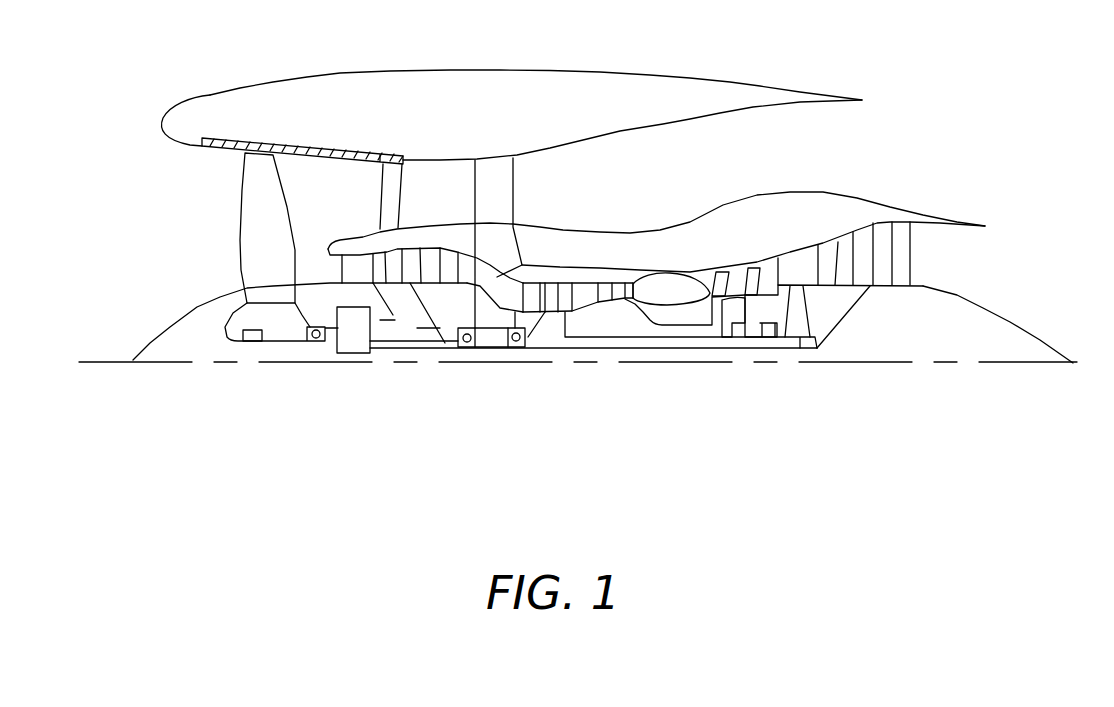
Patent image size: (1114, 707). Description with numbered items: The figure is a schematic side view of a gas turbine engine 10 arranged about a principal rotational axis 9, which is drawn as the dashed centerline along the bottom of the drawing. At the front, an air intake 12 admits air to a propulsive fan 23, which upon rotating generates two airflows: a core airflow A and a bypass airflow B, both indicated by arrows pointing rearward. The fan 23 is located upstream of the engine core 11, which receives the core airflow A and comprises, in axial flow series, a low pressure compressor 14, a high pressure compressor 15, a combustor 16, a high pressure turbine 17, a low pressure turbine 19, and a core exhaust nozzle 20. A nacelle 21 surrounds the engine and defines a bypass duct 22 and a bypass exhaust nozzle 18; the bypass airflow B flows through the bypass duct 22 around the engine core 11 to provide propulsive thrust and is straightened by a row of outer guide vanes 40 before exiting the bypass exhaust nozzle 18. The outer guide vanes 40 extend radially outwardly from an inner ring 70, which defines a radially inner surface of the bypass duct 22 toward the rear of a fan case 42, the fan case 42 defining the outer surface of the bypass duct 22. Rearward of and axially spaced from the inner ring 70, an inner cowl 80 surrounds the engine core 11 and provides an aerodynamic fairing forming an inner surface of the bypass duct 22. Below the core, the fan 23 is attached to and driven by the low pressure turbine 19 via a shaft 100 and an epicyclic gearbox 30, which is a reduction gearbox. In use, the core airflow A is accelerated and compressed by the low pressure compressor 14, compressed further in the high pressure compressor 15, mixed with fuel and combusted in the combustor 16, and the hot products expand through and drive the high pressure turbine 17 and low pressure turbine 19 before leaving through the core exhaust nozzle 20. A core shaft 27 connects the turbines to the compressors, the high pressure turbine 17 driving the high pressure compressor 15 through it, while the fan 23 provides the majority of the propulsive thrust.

The principal rotational axis 9 is at (860, 365).
The gas turbine engine 10 is at (200, 89).
The engine core 11 is at (637, 242).
The air intake 12 is at (184, 172).
The low pressure compressor 14 is at (427, 258).
The high pressure compressor 15 is at (584, 292).
The combustor 16 is at (667, 293).
The high pressure turbine 17 is at (733, 272).
The bypass exhaust nozzle 18 is at (864, 142).
The low pressure turbine 19 is at (882, 243).
The core exhaust nozzle 20 is at (958, 256).
The nacelle 21 is at (490, 87).
The bypass duct 22 is at (779, 158).
The propulsive fan 23 is at (224, 238).
The core shaft 27 is at (625, 338).
The epicyclic gearbox 30 is at (352, 342).
The outer guide vanes 40 is at (393, 167).
The fan case 42 is at (258, 142).
The inner ring 70 is at (390, 227).
The inner cowl 80 is at (737, 280).
The shaft 100 is at (417, 343).
The core airflow A is at (318, 268).
The bypass airflow B is at (318, 198).